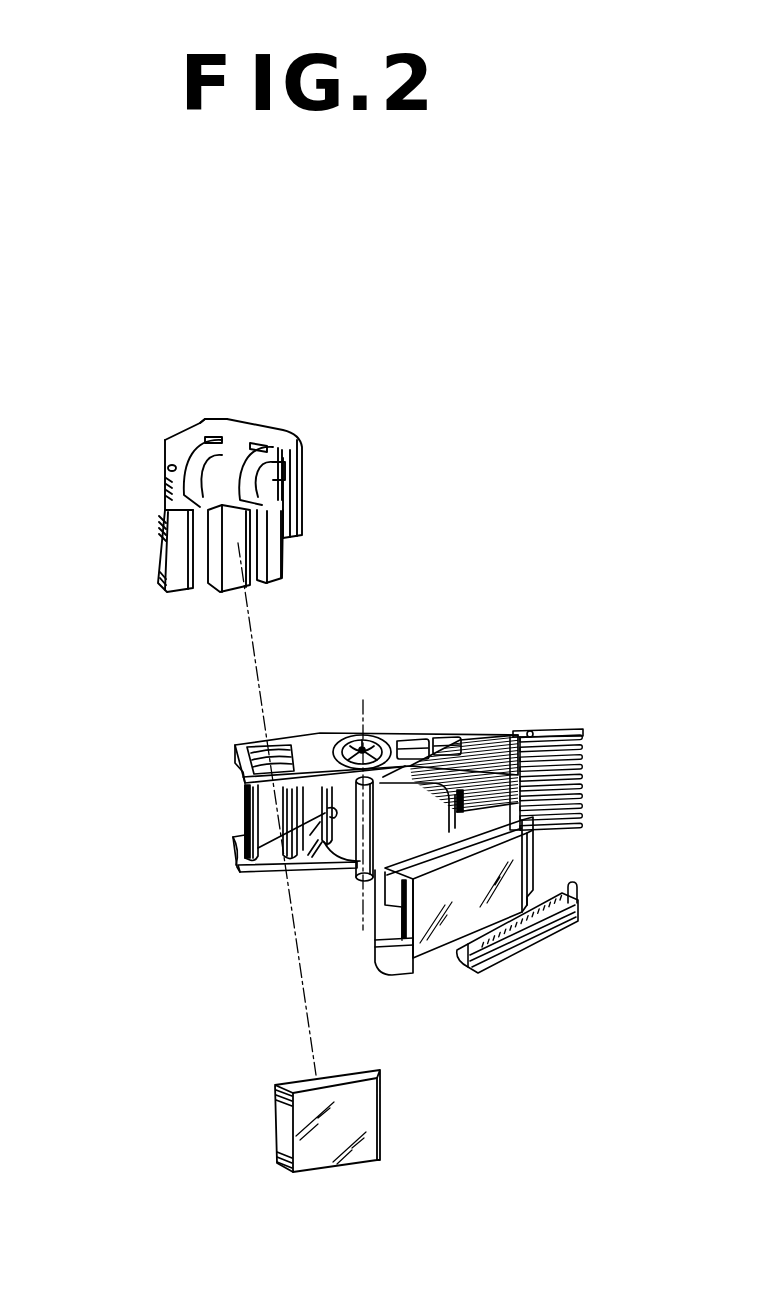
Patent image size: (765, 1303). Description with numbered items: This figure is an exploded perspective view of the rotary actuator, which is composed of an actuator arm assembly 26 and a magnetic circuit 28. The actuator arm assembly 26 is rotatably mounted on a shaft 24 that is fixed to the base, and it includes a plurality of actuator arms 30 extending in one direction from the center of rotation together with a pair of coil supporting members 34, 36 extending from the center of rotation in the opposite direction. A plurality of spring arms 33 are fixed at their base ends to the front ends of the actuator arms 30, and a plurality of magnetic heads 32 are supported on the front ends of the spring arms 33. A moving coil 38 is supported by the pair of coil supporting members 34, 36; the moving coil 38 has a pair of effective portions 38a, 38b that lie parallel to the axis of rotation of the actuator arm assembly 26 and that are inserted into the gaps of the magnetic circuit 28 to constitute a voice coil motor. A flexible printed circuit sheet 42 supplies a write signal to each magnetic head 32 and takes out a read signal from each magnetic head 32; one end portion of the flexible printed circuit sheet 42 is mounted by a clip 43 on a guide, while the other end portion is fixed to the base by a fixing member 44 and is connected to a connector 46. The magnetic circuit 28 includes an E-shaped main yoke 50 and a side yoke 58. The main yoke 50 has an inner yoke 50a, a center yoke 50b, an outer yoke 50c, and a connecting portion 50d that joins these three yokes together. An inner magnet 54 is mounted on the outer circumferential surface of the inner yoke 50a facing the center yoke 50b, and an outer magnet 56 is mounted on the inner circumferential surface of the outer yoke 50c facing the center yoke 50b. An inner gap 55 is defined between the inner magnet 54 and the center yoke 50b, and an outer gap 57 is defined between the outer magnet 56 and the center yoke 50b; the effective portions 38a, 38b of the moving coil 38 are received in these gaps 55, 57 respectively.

The shaft 24 is at (362, 749).
The actuator arm assembly 26 is at (377, 717).
The magnetic circuit 28 is at (160, 428).
The actuator arms 30 is at (410, 733).
The magnetic heads 32 is at (582, 731).
The spring arms 33 is at (556, 731).
The coil supporting member 34 is at (300, 740).
The coil supporting member 36 is at (308, 870).
The moving coil 38 is at (245, 803).
The effective portion 38a is at (247, 866).
The effective portion 38b is at (240, 822).
The flexible printed circuit sheet 42 is at (449, 815).
The clip 43 is at (374, 813).
The fixing member 44 is at (530, 853).
The connector 46 is at (568, 928).
The main yoke 50 is at (252, 424).
The inner yoke 50a is at (283, 527).
The center yoke 50b is at (222, 580).
The outer yoke 50c is at (165, 502).
The connecting portion 50d is at (213, 421).
The inner magnet 54 is at (285, 462).
The inner gap 55 is at (273, 448).
The outer magnet 56 is at (204, 440).
The outer gap 57 is at (200, 467).
The side yoke 58 is at (367, 1107).